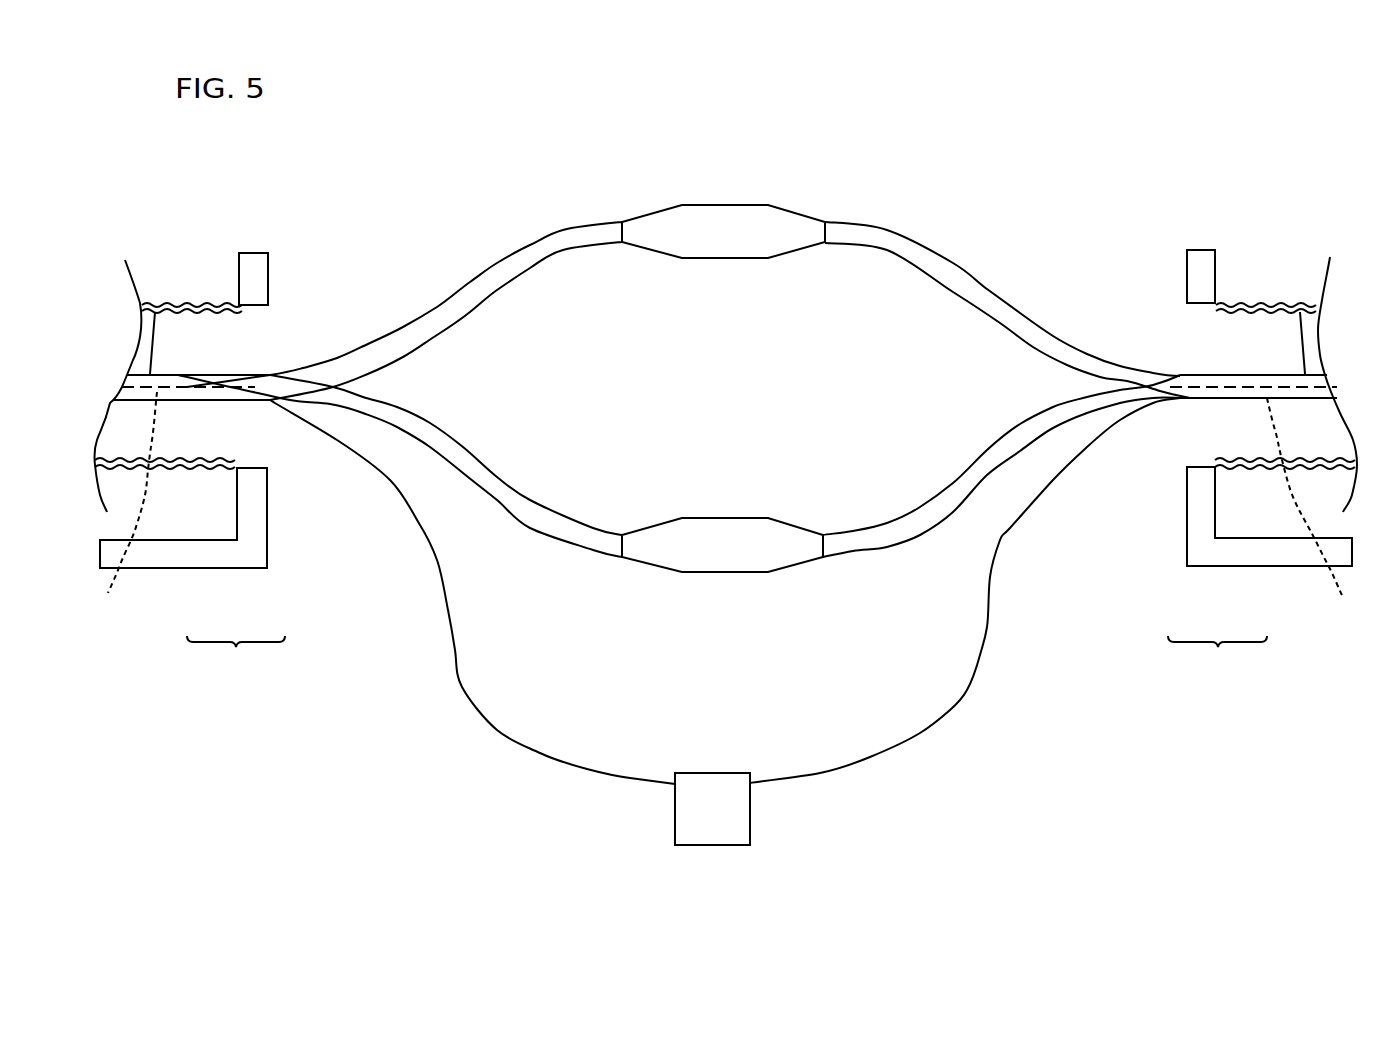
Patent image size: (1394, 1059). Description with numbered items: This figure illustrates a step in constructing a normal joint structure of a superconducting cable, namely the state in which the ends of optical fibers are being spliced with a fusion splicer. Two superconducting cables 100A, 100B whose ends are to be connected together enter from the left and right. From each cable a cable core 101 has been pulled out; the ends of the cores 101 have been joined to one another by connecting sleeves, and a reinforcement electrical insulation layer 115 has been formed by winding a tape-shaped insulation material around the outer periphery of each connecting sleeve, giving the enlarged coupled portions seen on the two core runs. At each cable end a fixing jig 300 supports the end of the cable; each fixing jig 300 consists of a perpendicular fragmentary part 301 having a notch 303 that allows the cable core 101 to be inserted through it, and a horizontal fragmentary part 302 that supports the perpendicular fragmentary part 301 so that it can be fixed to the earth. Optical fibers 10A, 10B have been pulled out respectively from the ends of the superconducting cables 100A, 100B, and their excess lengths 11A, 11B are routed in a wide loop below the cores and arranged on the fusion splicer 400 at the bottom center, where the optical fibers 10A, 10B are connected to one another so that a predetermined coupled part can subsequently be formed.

The cable core 101 is at (160, 327).
The reinforcement electrical insulation layer 115 is at (658, 210).
The excess length of optical fiber 11A is at (503, 733).
The excess length of optical fiber 11B is at (962, 695).
The fusion splicer 400 is at (697, 773).
The superconducting cable 100A is at (191, 298).
The superconducting cable 100B is at (1259, 298).
The notch 303 is at (262, 306).
The optical fiber 10A is at (174, 505).
The optical fiber 10B is at (1270, 508).
The perpendicular fragmentary part 301 is at (268, 512).
The horizontal fragmentary part 302 is at (198, 570).
The fixing jig 300 is at (727, 657).